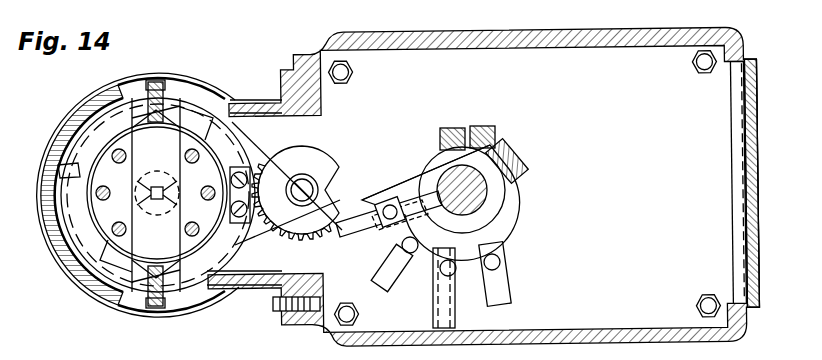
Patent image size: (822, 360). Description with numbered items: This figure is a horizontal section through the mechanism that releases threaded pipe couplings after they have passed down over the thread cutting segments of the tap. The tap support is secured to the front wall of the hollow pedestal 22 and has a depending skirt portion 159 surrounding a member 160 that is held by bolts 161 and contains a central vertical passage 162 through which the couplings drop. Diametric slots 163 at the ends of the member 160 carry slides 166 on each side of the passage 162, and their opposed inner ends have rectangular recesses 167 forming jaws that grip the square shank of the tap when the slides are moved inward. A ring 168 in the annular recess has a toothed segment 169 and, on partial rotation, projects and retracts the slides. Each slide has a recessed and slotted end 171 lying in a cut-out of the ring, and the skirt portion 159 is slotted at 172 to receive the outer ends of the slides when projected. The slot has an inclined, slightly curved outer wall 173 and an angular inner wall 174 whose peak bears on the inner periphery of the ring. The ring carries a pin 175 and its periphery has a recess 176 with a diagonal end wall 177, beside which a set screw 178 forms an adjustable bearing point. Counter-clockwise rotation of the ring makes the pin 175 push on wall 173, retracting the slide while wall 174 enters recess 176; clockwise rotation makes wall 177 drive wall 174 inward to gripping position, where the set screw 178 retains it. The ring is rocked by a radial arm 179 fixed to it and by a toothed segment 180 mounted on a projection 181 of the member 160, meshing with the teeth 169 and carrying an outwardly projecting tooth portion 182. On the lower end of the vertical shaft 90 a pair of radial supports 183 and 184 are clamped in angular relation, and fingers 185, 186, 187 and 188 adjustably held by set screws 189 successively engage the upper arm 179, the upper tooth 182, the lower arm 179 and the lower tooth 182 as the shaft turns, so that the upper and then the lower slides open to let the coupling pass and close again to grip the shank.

The hollow pedestal 22 is at (482, 187).
The vertical shaft 90 is at (490, 200).
The skirt portion 159 is at (60, 120).
The member 160 is at (111, 220).
The bolts 161 is at (112, 184).
The central vertical passage 162 is at (186, 192).
The diametric slots 163 is at (134, 244).
The slides 166 is at (156, 195).
The rectangular recesses 167 is at (157, 193).
The ring 168 is at (250, 145).
The toothed segment 169 is at (258, 242).
The recessed and slotted end 171 is at (108, 92).
The slot 172 is at (200, 90).
The outer wall 173 is at (152, 86).
The inner wall 174 is at (156, 194).
The pin 175 is at (222, 82).
The recess 176 is at (136, 189).
The end wall 177 is at (232, 100).
The set screw 178 is at (160, 82).
The radial arm 179 is at (308, 290).
The toothed segment 180 is at (322, 158).
The projection 181 is at (292, 140).
The tooth portion 182 is at (320, 188).
The radial support 183 is at (410, 172).
The radial support 184 is at (505, 237).
The projecting finger 185 is at (348, 240).
The projecting finger 186 is at (385, 284).
The projecting finger 187 is at (446, 312).
The projecting finger 188 is at (504, 298).
The set screws 189 is at (392, 205).